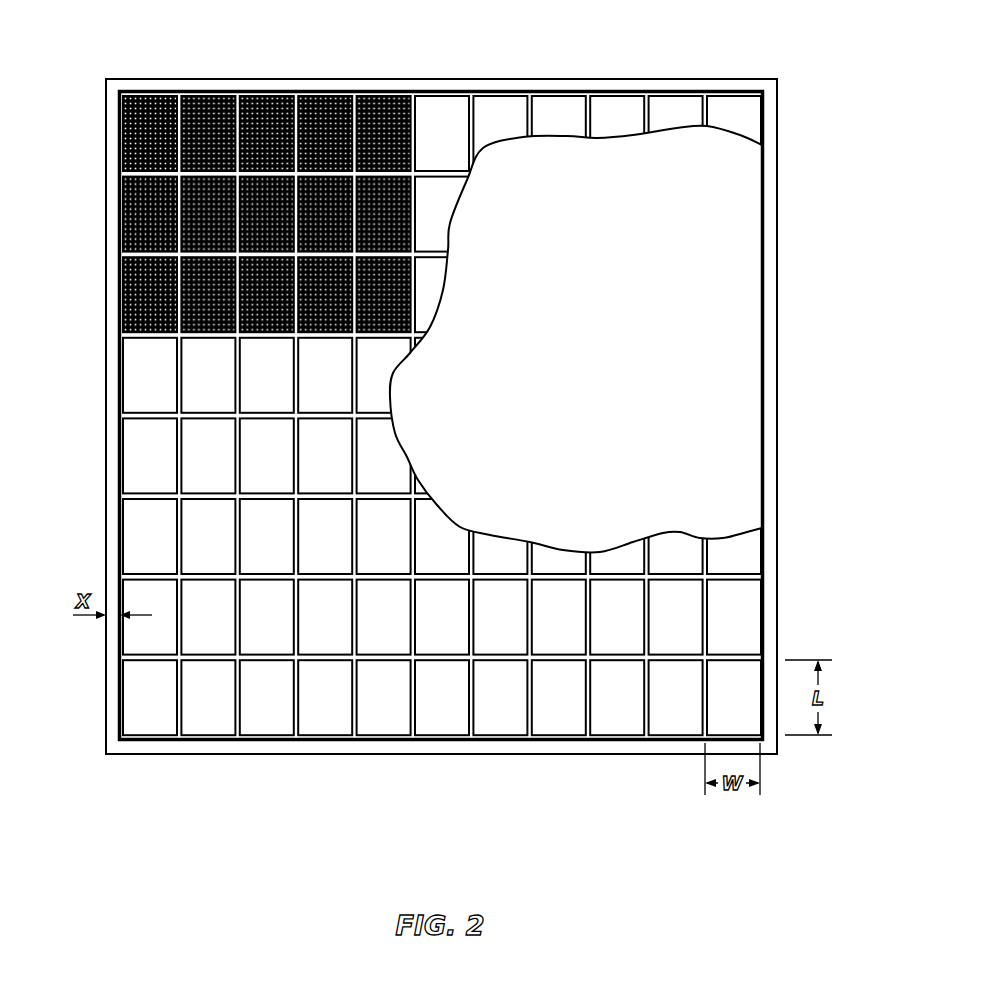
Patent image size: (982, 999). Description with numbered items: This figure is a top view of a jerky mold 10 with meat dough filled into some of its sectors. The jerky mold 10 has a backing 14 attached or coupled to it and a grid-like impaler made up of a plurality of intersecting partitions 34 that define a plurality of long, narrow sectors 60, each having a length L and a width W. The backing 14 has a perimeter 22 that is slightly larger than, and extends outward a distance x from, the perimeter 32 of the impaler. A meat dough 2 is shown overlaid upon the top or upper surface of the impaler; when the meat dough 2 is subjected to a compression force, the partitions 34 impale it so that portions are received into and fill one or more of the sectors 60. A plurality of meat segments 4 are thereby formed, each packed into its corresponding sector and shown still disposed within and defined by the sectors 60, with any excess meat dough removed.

The jerky mold 10 is at (743, 72).
The backing 14 is at (377, 747).
The perimeter 22 is at (555, 755).
The perimeter 32 is at (765, 302).
The meat dough 2 is at (703, 402).
The meat segments 4 is at (337, 97).
The partitions 34 is at (182, 708).
The sectors 60 is at (622, 620).